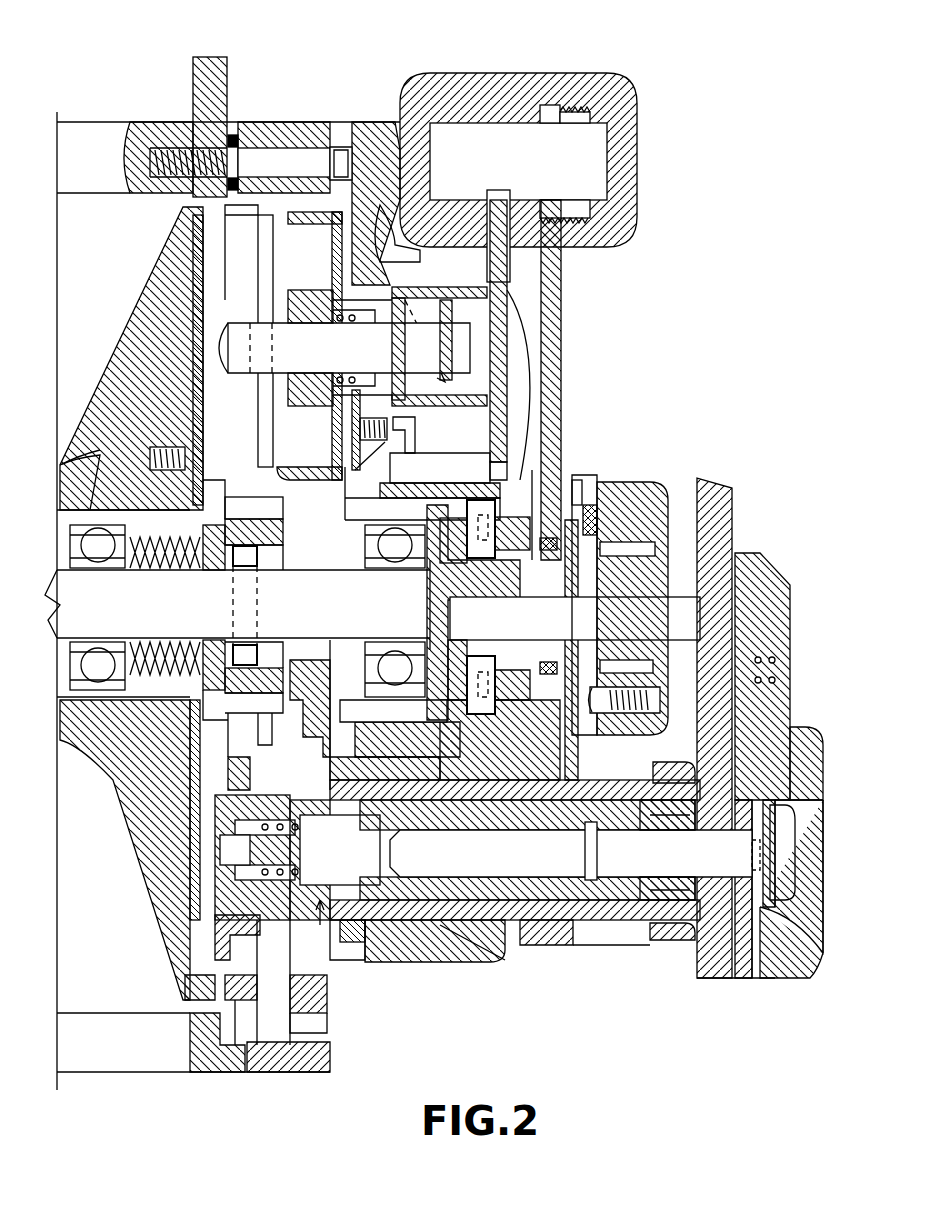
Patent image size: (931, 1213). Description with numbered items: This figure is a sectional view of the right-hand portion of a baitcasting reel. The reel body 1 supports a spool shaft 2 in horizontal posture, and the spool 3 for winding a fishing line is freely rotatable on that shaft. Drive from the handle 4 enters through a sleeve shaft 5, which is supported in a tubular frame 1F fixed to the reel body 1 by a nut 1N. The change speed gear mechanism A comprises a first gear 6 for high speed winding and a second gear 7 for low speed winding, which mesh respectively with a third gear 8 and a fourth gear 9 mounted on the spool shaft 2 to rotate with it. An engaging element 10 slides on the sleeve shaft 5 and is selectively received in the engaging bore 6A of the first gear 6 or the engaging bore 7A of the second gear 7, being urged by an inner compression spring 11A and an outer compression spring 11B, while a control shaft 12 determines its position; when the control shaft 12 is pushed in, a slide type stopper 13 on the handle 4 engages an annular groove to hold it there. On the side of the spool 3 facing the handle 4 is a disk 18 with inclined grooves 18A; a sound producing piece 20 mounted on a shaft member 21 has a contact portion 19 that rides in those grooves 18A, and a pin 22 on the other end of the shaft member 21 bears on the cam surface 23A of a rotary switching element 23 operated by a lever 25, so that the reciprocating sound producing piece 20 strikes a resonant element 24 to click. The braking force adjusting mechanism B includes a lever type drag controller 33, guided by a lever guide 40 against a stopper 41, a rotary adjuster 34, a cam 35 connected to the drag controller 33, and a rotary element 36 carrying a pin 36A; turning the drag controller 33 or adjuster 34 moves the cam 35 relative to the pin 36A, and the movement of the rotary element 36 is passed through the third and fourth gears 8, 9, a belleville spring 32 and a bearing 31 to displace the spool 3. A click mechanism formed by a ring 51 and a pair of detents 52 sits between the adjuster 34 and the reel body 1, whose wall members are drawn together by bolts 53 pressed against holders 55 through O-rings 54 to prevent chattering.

The reel body 1 is at (315, 130).
The tubular frame 1F is at (505, 925).
The nut 1N is at (455, 942).
The spool shaft 2 is at (243, 611).
The spool 3 is at (125, 833).
The handle 4 is at (720, 505).
The sleeve shaft 5 is at (530, 898).
The first gear 6 is at (315, 1025).
The engaging bore 6A is at (330, 940).
The second gear 7 is at (235, 1045).
The engaging bore 7A is at (250, 920).
The third gear 8 is at (325, 520).
The fourth gear 9 is at (230, 500).
The engaging element 10 is at (395, 855).
The inner compression spring 11A is at (230, 880).
The outer compression spring 11B is at (410, 922).
The control shaft 12 is at (622, 870).
The stopper 13 is at (760, 570).
The disk 18 is at (195, 285).
The grooves 18A is at (195, 340).
The contact portion 19 is at (230, 350).
The sound producing piece 20 is at (258, 275).
The shaft member 21 is at (349, 348).
The pin 22 is at (470, 392).
The switching element 23 is at (505, 300).
The cam surface 23A is at (443, 382).
The resonant element 24 is at (300, 214).
The lever 25 is at (573, 100).
The bearing 31 is at (95, 480).
The belleville spring 32 is at (140, 537).
The drag controller 33 is at (560, 255).
The adjuster 34 is at (600, 470).
The cam 35 is at (500, 530).
The rotary element 36 is at (425, 608).
The pin 36A is at (480, 490).
The lever guide 40 is at (500, 212).
The stopper 41 is at (405, 244).
The ring 51 is at (593, 505).
The detents 52 is at (600, 718).
The bolts 53 is at (340, 124).
The O-rings 54 is at (233, 134).
The holders 55 is at (193, 82).
The change speed gear mechanism A is at (212, 763).
The braking force adjusting mechanism B is at (657, 398).